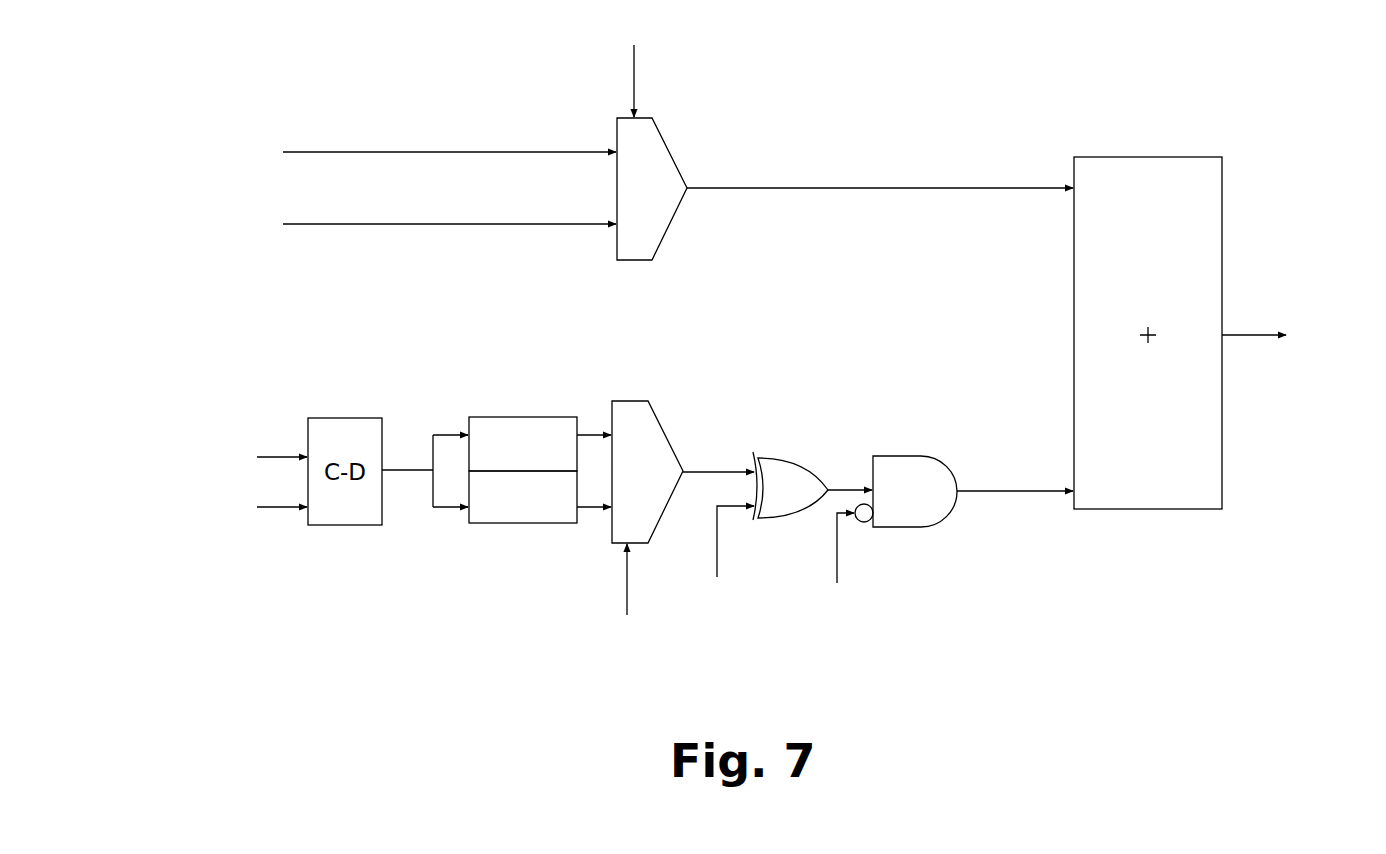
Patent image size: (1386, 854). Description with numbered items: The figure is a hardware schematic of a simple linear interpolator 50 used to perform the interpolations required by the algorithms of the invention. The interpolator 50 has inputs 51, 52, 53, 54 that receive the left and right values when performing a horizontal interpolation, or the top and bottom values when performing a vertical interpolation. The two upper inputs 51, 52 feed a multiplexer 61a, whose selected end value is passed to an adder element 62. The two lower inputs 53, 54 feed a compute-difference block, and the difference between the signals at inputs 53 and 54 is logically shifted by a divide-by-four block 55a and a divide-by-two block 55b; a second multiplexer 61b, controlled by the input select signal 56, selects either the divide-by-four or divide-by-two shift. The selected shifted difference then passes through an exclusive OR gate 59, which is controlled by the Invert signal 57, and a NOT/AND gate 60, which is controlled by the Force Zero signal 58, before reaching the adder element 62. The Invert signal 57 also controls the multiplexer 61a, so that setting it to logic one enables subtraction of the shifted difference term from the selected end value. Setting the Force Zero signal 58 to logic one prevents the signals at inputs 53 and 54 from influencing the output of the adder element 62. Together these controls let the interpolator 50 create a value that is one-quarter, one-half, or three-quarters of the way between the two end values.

The linear interpolator 50 is at (920, 77).
The input 51 is at (482, 151).
The input 52 is at (486, 228).
The input 53 is at (266, 455).
The input 54 is at (267, 512).
The divide-by-four block 55a is at (495, 417).
The divide-by-two block 55b is at (504, 523).
The input select signal 56 is at (627, 592).
The Invert signal 57 is at (633, 77).
The Force Zero signal 58 is at (838, 561).
The exclusive OR gate 59 is at (775, 451).
The NOT/AND gate 60 is at (952, 463).
The multiplexer 61a is at (690, 166).
The multiplexer 61b is at (673, 421).
The adder element 62 is at (1220, 156).